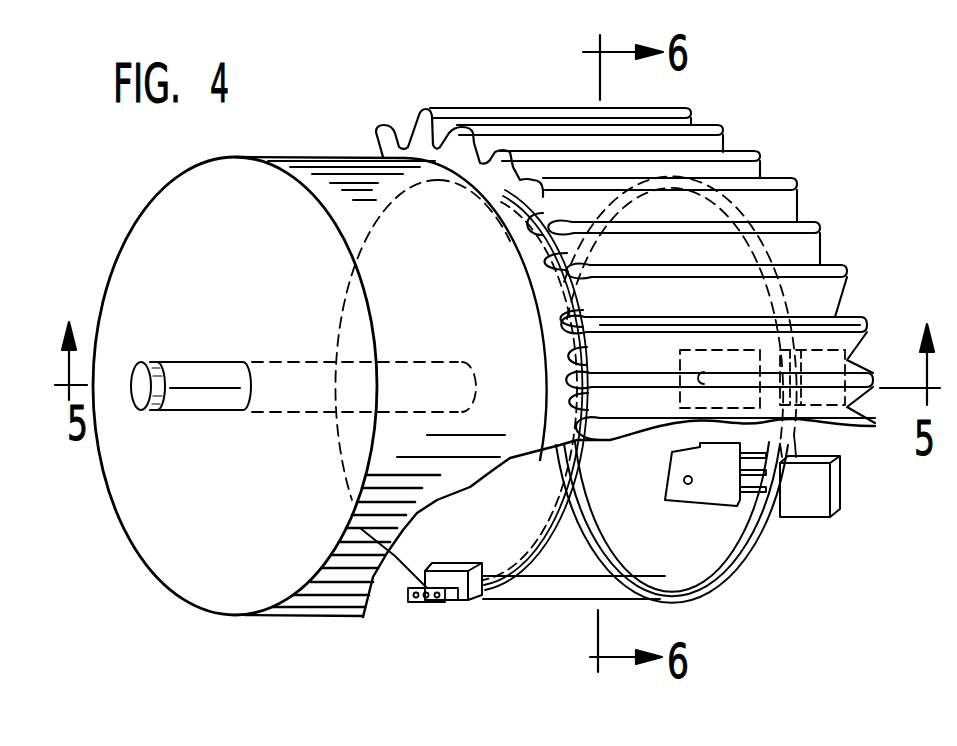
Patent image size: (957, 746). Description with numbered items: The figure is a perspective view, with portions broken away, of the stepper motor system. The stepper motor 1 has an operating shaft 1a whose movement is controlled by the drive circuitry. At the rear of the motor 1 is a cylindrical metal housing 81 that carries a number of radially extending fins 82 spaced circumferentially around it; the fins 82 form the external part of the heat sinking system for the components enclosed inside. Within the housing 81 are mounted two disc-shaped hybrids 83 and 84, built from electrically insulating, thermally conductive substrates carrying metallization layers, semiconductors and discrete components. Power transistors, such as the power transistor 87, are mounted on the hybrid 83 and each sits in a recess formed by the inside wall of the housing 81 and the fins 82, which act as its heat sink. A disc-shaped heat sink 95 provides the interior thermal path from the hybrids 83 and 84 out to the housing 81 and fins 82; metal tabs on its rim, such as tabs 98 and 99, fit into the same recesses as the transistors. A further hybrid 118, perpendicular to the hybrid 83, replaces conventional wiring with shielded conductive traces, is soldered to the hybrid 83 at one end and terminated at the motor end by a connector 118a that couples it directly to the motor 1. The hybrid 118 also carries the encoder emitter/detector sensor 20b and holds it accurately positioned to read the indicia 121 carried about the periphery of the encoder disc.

The stepper motor 1 is at (170, 569).
The operating shaft 1a is at (187, 412).
The housing 81 is at (450, 172).
The fins 82 is at (800, 203).
The hybrid 83 is at (727, 522).
The hybrid 84 is at (747, 556).
The power transistor 87 is at (787, 307).
The heat sink 95 is at (753, 547).
The metal tab 98 is at (847, 323).
The metal tab 99 is at (828, 485).
The hybrid 118 is at (645, 596).
The connector 118a is at (419, 603).
The encoder emitter/detector sensor 20b is at (474, 602).
The indicia 121 is at (525, 576).